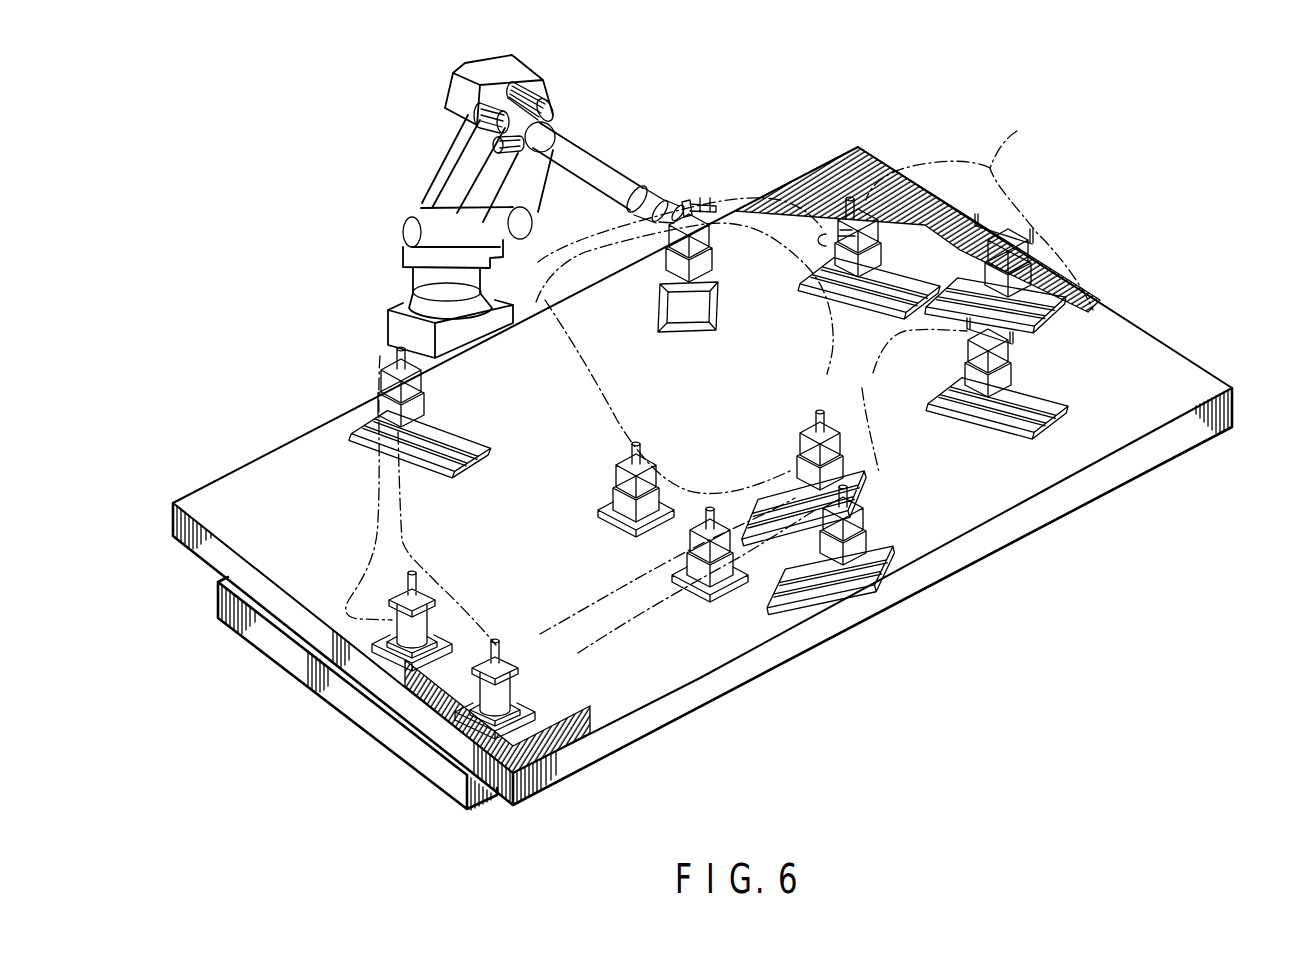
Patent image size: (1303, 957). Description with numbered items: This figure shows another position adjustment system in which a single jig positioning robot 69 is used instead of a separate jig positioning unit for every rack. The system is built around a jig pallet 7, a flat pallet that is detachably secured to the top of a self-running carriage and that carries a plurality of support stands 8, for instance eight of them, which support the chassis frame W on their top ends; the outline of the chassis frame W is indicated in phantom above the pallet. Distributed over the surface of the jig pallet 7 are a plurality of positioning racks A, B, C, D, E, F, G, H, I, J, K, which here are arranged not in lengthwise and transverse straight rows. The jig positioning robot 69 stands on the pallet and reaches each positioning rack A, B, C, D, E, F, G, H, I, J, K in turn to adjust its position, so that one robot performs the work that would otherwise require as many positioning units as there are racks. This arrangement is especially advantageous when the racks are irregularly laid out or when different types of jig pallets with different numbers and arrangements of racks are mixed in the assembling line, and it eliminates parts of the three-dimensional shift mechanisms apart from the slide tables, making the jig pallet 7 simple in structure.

The jig-pallet 7 is at (1204, 357).
The support stands 8 is at (878, 497).
The jig positioning robot 69 is at (564, 102).
The chassis frame W is at (979, 238).
The positioning rack A is at (423, 397).
The positioning rack B is at (708, 254).
The positioning rack C is at (871, 261).
The positioning rack D is at (1035, 252).
The positioning rack E is at (512, 684).
The positioning rack F is at (725, 554).
The positioning rack G is at (868, 533).
The positioning rack H is at (1008, 355).
The positioning rack I is at (427, 630).
The positioning rack J is at (613, 470).
The positioning rack K is at (798, 443).